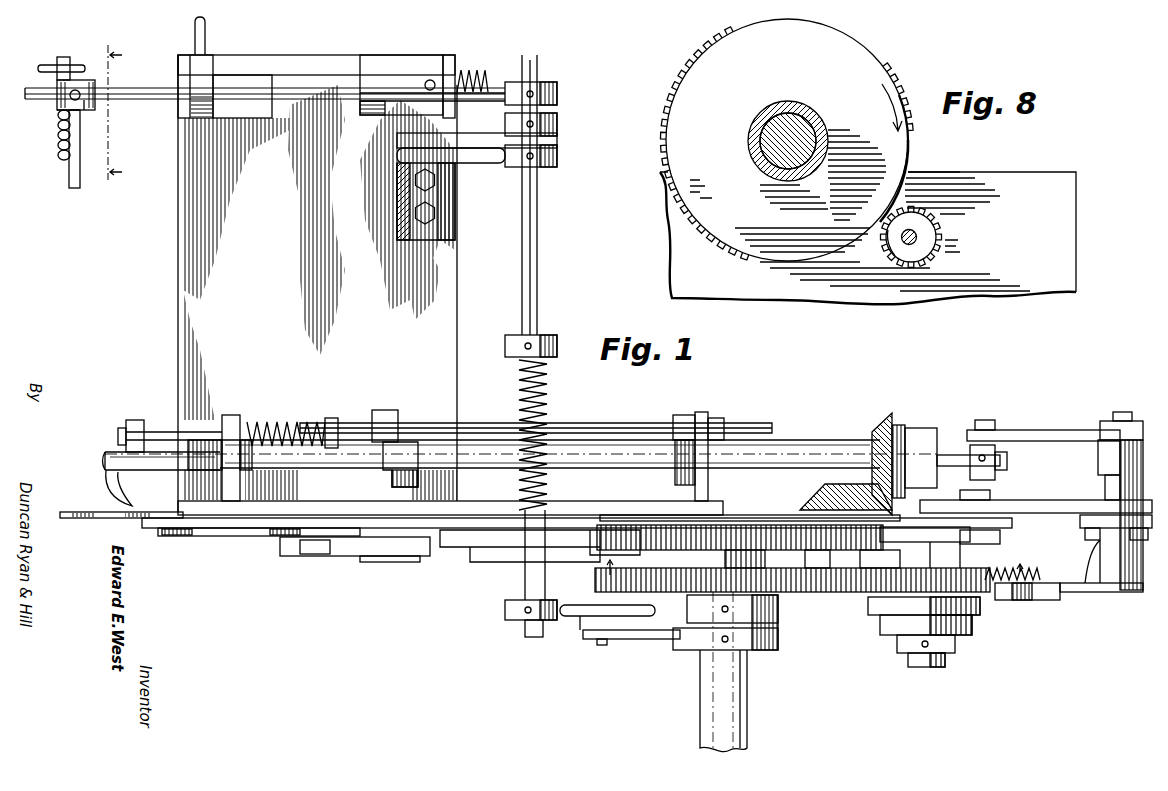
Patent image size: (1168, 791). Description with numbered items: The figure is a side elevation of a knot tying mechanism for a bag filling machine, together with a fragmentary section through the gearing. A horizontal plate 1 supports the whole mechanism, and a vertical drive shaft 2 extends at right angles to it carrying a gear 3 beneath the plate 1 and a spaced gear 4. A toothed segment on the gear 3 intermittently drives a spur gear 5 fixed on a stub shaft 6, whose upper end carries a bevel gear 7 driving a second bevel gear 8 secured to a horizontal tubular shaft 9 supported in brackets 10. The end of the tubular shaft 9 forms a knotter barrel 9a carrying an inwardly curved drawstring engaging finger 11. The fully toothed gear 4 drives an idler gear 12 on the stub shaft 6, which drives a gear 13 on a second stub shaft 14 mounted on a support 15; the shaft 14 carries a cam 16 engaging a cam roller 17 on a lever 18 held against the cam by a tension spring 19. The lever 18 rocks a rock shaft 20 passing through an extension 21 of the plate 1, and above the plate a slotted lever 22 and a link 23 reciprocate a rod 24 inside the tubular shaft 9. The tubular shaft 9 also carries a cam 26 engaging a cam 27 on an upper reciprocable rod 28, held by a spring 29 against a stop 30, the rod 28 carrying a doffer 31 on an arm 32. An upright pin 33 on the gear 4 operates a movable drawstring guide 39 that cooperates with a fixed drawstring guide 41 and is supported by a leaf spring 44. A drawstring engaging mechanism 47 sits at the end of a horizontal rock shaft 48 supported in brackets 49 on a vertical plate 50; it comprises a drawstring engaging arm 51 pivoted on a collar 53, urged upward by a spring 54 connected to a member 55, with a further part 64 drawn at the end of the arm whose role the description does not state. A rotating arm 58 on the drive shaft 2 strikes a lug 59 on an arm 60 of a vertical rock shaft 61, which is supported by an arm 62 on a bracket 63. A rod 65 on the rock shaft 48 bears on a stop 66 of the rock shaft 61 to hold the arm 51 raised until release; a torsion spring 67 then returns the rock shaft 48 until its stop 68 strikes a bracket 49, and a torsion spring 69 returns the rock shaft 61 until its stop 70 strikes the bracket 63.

In FIG. 8, the horizontal plate 1 is at (1012, 284).
In FIG. 1, the horizontal plate 1 is at (218, 540).
In FIG. 8, the vertical drive shaft 2 is at (808, 128).
In FIG. 1, the vertical drive shaft 2 is at (750, 712).
In FIG. 8, the gear 3 is at (668, 120).
In FIG. 1, the gear 3 is at (662, 548).
In FIG. 1, the gear 4 is at (805, 596).
In FIG. 8, the spur gear 5 is at (940, 231).
In FIG. 1, the spur gear 5 is at (905, 540).
In FIG. 8, the stub shaft 6 is at (902, 254).
In FIG. 1, the bevel gear 7 is at (820, 490).
In FIG. 1, the second bevel gear 8 is at (870, 424).
In FIG. 1, the tubular shaft 9 is at (344, 462).
In FIG. 1, the knotter barrel 9a is at (102, 452).
In FIG. 1, the brackets 10 is at (708, 412).
In FIG. 1, the drawstring engaging finger 11 is at (104, 488).
In FIG. 1, the idler gear 12 is at (865, 596).
In FIG. 1, the gear 13 is at (974, 545).
In FIG. 1, the second stub shaft 14 is at (940, 668).
In FIG. 1, the support 15 is at (965, 546).
In FIG. 1, the cam 16 is at (972, 618).
In FIG. 1, the cam roller 17 is at (1052, 600).
In FIG. 1, the lever 18 is at (1108, 592).
In FIG. 1, the tension spring 19 is at (1042, 570).
In FIG. 1, the rock shaft 20 is at (1105, 492).
In FIG. 1, the extension 21 is at (1040, 476).
In FIG. 1, the lever 22 is at (1110, 410).
In FIG. 1, the link 23 is at (1046, 408).
In FIG. 1, the reciprocable rod 24 is at (948, 452).
In FIG. 1, the cam 26 is at (388, 490).
In FIG. 1, the cam 27 is at (392, 408).
In FIG. 1, the reciprocable rod 28 is at (490, 400).
In FIG. 1, the spring 29 is at (308, 418).
In FIG. 1, the stop 30 is at (336, 416).
In FIG. 1, the doffer 31 is at (124, 434).
In FIG. 1, the arm 32 is at (136, 416).
In FIG. 1, the upright pin 33 is at (760, 560).
In FIG. 1, the movable drawstring guide 39 is at (282, 538).
In FIG. 1, the fixed drawstring guide 41 is at (86, 512).
In FIG. 1, the leaf spring 44 is at (336, 556).
In FIG. 1, the drawstring engaging mechanism 47 is at (50, 134).
In FIG. 1, the horizontal rock shaft 48 is at (148, 88).
In FIG. 1, the brackets 49 is at (426, 56).
In FIG. 1, the plate 50 is at (185, 270).
In FIG. 1, the drawstring engaging arm 51 is at (60, 90).
In FIG. 1, the collar 53 is at (86, 112).
In FIG. 1, the spring 54 is at (60, 146).
In FIG. 1, the member 55 is at (80, 182).
In FIG. 1, the rotating arm 58 is at (632, 639).
In FIG. 1, the lug 59 is at (600, 645).
In FIG. 1, the arm 60 is at (570, 618).
In FIG. 1, the vertical rock shaft 61 is at (520, 630).
In FIG. 1, the arm 62 is at (490, 142).
In FIG. 1, the bracket 63 is at (448, 170).
In FIG. 1, the flange 64 is at (48, 66).
In FIG. 1, the rod 65 is at (425, 80).
In FIG. 1, the stop 66 is at (410, 96).
In FIG. 1, the torsion spring 67 is at (478, 68).
In FIG. 1, the stop 68 is at (204, 24).
In FIG. 1, the torsion spring 69 is at (548, 380).
In FIG. 1, the stop 70 is at (500, 168).